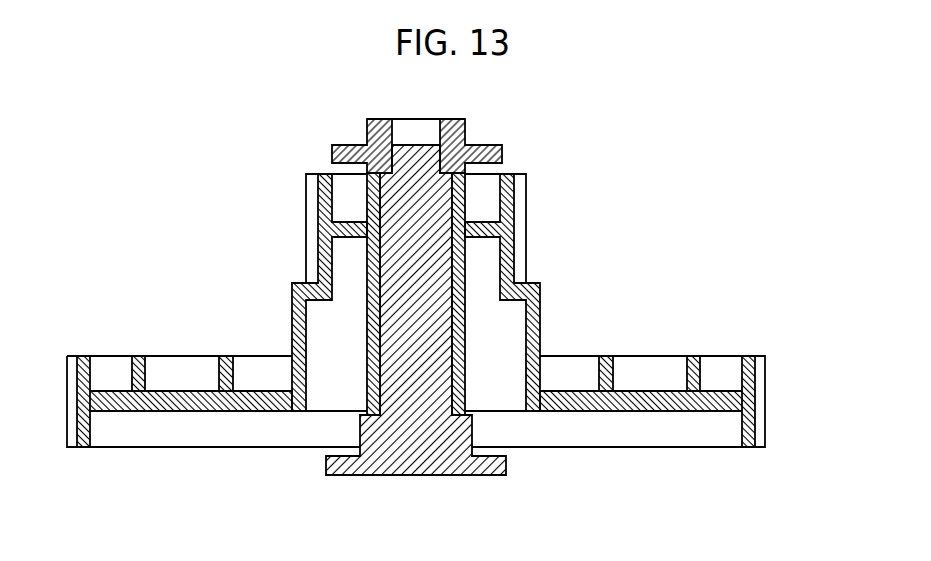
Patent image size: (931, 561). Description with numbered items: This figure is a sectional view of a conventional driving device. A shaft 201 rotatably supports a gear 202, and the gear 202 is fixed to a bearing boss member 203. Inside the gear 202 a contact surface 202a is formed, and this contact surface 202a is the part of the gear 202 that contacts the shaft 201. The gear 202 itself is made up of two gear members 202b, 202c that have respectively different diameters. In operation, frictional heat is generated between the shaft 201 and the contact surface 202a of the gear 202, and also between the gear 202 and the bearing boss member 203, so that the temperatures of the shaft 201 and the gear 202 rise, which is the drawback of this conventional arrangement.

The shaft 201 is at (431, 476).
The gear 202 is at (642, 350).
The contact surface 202a is at (452, 250).
The gear member 202b is at (533, 214).
The gear member 202c is at (356, 341).
The bearing boss member 203 is at (361, 131).